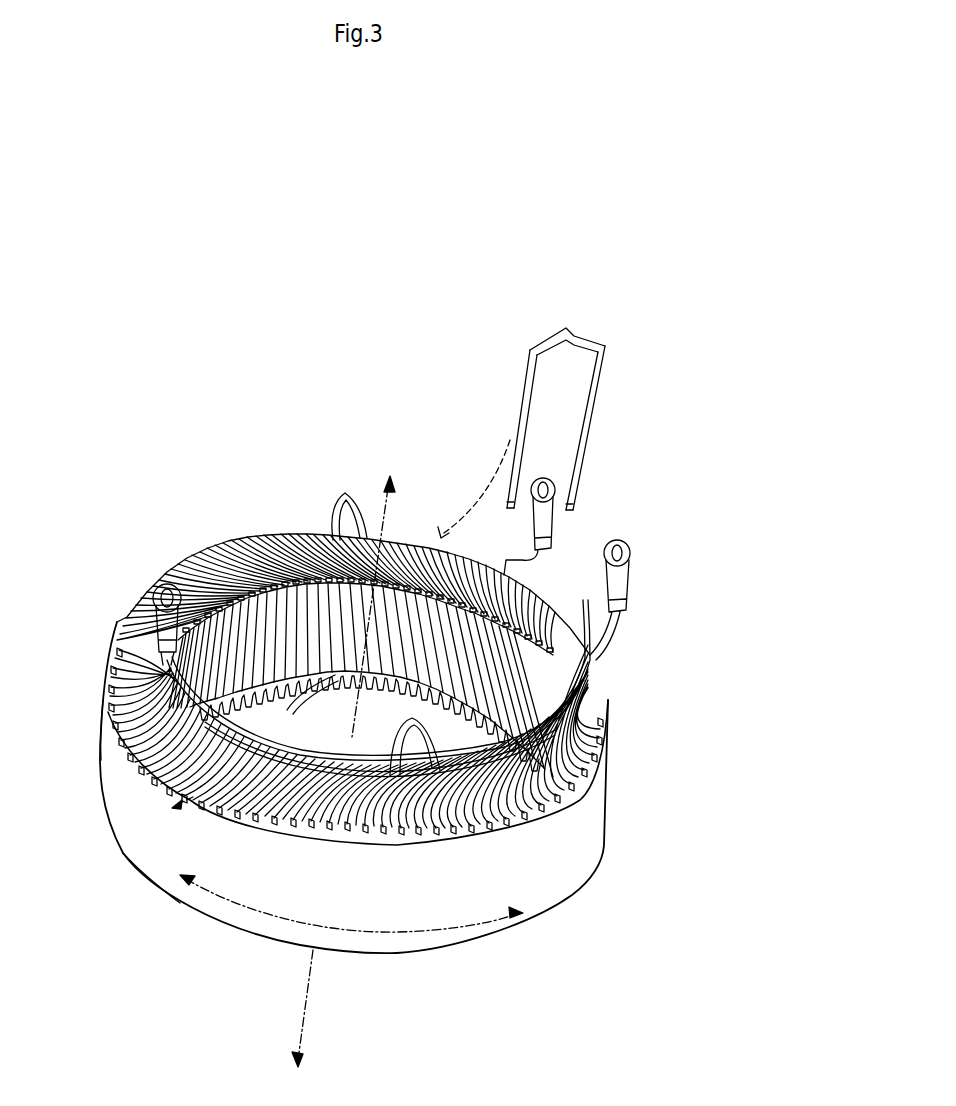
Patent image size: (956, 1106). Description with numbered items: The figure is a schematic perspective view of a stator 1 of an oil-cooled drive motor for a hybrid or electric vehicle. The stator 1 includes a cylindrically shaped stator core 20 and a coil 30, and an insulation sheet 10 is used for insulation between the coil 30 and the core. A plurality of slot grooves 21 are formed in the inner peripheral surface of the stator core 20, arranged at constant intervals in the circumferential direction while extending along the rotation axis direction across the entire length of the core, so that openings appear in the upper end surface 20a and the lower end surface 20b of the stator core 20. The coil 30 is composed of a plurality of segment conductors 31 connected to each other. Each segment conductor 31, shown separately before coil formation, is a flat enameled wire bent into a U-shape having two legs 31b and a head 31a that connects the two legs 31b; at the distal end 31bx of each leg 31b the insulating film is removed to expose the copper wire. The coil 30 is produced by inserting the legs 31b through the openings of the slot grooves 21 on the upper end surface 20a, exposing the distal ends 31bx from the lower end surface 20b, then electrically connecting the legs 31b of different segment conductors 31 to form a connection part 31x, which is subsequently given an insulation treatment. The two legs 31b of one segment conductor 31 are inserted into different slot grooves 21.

The stator 1 is at (147, 518).
The insulation sheet 10 is at (447, 823).
The stator core 20 is at (600, 733).
The upper end surface 20a is at (107, 683).
The lower end surface 20b is at (133, 870).
The slot groove 21 is at (377, 726).
The coil 30 is at (600, 667).
The segment conductor 31 is at (543, 331).
The head 31a is at (585, 335).
The leg 31b is at (597, 400).
The distal end 31bx is at (578, 508).
The connection part 31x is at (292, 703).